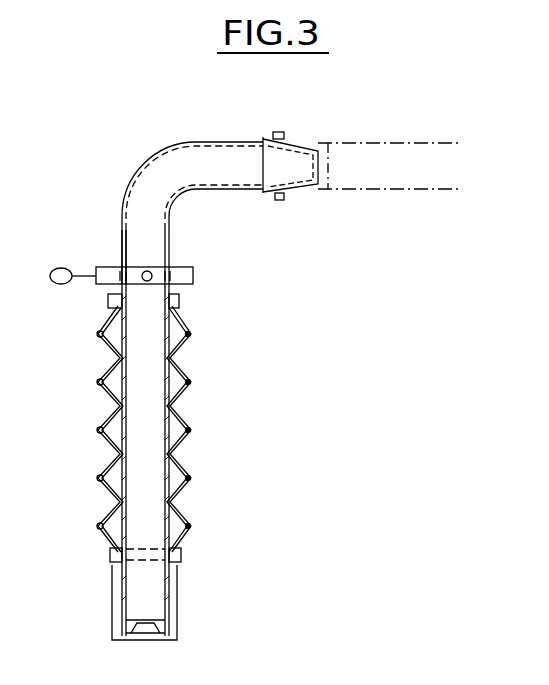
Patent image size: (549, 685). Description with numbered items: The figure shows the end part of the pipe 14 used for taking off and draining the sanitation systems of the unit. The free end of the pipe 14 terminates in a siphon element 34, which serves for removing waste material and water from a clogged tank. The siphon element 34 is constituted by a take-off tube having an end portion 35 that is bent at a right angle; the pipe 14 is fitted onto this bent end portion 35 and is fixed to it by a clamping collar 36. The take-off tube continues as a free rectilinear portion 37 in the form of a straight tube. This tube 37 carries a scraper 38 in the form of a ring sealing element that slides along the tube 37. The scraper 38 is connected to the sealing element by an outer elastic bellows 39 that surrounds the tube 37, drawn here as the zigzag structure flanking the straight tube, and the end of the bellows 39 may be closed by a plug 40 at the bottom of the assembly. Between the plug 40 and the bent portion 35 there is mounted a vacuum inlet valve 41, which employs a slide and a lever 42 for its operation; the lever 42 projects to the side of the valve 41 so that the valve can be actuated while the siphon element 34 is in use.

The pipe 14 is at (382, 142).
The siphon element 34 is at (104, 228).
The end portion 35 is at (203, 142).
The clamping collar 36 is at (279, 132).
The free rectilinear portion 37 is at (160, 494).
The scraper 38 is at (110, 554).
The outer elastic bellows 39 is at (175, 463).
The plug 40 is at (110, 607).
The vacuum inlet valve 41 is at (182, 267).
The lever 42 is at (58, 287).